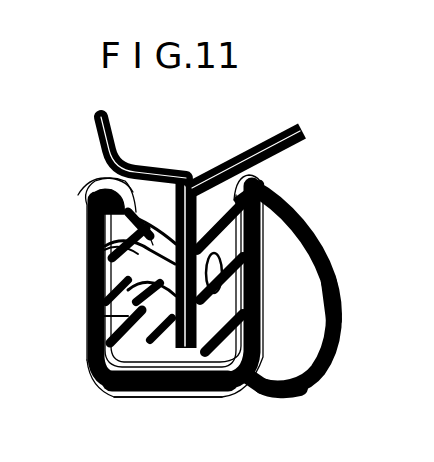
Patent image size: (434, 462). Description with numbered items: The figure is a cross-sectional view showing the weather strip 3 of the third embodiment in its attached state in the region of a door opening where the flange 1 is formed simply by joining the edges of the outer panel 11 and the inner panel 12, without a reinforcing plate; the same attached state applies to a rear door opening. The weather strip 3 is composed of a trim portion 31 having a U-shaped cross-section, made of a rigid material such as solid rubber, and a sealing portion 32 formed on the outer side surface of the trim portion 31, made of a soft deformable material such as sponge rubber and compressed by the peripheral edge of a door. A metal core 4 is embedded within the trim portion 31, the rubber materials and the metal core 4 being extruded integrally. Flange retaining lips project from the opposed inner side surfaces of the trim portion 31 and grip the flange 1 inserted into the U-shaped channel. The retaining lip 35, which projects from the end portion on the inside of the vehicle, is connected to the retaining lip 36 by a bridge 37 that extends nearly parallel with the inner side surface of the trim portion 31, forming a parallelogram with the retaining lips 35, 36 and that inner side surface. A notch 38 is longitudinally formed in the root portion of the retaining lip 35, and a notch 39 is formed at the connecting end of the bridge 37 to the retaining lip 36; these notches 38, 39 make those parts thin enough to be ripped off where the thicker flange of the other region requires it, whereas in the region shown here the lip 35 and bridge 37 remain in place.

The flange 1 is at (178, 398).
The weather strip 3 is at (324, 236).
The metal core 4 is at (92, 268).
The outer panel 11 is at (99, 163).
The inner panel 12 is at (227, 164).
The trim portion 31 is at (212, 398).
The sealing portion 32 is at (340, 287).
The flange retaining lip 35 is at (150, 236).
The flange retaining lip 36 is at (110, 390).
The bridge 37 is at (88, 255).
The notch 38 is at (96, 183).
The notch 39 is at (105, 316).